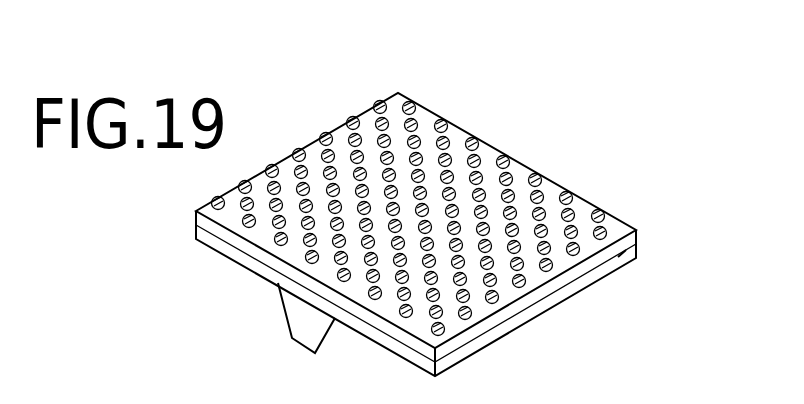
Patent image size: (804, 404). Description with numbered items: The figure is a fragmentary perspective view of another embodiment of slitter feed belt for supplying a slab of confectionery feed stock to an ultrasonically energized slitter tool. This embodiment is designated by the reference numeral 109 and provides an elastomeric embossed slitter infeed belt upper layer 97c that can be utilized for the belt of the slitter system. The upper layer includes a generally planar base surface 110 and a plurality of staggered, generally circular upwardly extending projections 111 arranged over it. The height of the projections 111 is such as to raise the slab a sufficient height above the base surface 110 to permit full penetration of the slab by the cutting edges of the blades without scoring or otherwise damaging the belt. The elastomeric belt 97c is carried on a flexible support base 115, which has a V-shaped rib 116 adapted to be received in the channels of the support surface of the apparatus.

The embossed slitter infeed belt upper layer embodiment 109 is at (404, 213).
The base surface 110 is at (422, 118).
The projections 111 is at (568, 192).
The flexible support base 115 is at (638, 246).
The mounting tab 116 is at (311, 321).
The elastomeric belt 97c is at (200, 222).